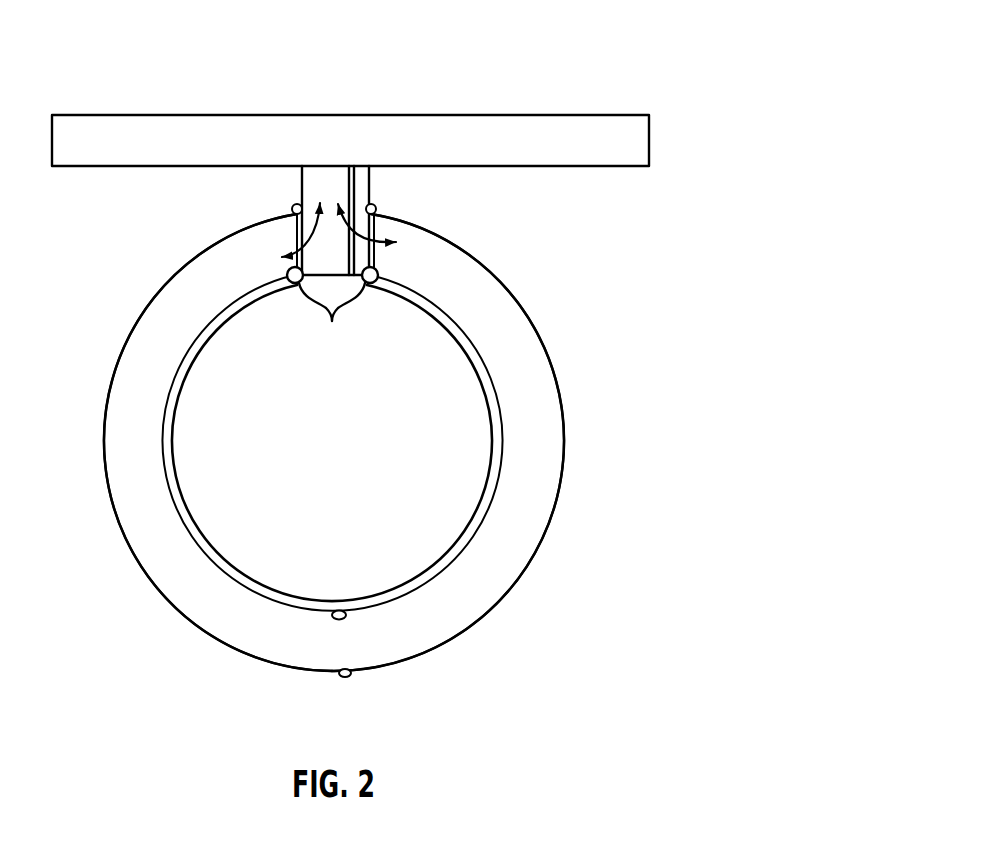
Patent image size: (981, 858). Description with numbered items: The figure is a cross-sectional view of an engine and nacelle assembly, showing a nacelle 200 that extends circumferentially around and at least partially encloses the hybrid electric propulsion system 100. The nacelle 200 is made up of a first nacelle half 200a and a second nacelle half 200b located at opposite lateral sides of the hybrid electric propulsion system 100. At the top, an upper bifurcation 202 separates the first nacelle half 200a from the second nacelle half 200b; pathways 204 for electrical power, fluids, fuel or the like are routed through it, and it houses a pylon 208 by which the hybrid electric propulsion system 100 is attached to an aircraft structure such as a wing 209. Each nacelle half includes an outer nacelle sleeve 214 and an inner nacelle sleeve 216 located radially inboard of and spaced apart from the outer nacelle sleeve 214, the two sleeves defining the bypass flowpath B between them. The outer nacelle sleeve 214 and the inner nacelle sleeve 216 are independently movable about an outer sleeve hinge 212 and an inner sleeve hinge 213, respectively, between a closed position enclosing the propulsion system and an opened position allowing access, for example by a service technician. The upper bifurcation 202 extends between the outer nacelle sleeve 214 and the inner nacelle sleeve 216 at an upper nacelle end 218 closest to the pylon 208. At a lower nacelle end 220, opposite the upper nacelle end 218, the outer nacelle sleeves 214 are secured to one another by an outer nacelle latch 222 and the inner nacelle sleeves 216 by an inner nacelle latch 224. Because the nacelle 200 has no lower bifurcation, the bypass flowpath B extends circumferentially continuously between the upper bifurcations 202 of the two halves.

The hybrid electric propulsion system 100 is at (350, 441).
The nacelle 200 is at (371, 442).
The first nacelle half 200a is at (155, 294).
The second nacelle half 200b is at (490, 273).
The upper bifurcation 202 is at (289, 272).
The pathways 204 is at (352, 176).
The pylon 208 is at (328, 182).
The wing 209 is at (590, 127).
The outer sleeve hinge 212 is at (292, 207).
The inner sleeve hinge 213 is at (332, 321).
The outer nacelle sleeve 214 is at (117, 363).
The inner nacelle sleeve 216 is at (197, 545).
The upper nacelle end 218 is at (524, 187).
The lower nacelle end 220 is at (424, 685).
The outer nacelle latch 222 is at (345, 678).
The inner nacelle latch 224 is at (340, 602).
The bypass flowpath B is at (505, 337).